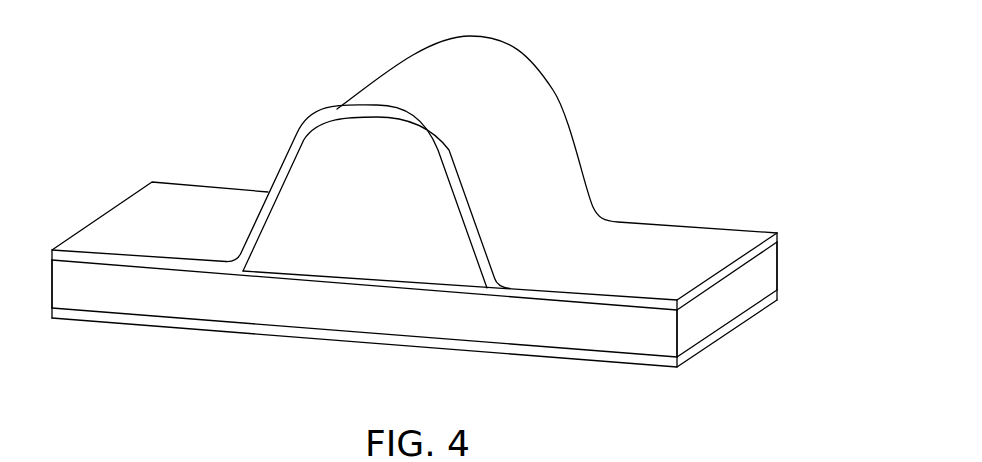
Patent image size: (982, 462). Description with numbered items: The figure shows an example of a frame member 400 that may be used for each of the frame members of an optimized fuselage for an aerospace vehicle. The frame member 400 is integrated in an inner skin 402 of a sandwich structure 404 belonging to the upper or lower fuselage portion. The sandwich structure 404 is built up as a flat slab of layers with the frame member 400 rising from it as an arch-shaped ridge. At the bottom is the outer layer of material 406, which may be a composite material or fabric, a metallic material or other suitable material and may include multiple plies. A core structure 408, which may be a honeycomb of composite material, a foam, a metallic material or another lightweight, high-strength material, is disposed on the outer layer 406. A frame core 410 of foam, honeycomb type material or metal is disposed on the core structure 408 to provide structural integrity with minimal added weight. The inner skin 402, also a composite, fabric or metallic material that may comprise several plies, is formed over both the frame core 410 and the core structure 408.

The frame member 400 is at (481, 194).
The inner skin 402 is at (779, 234).
The sandwich structure 404 is at (456, 299).
The outer layer of material 406 is at (610, 364).
The core structure 408 is at (775, 267).
The frame core 410 is at (292, 258).